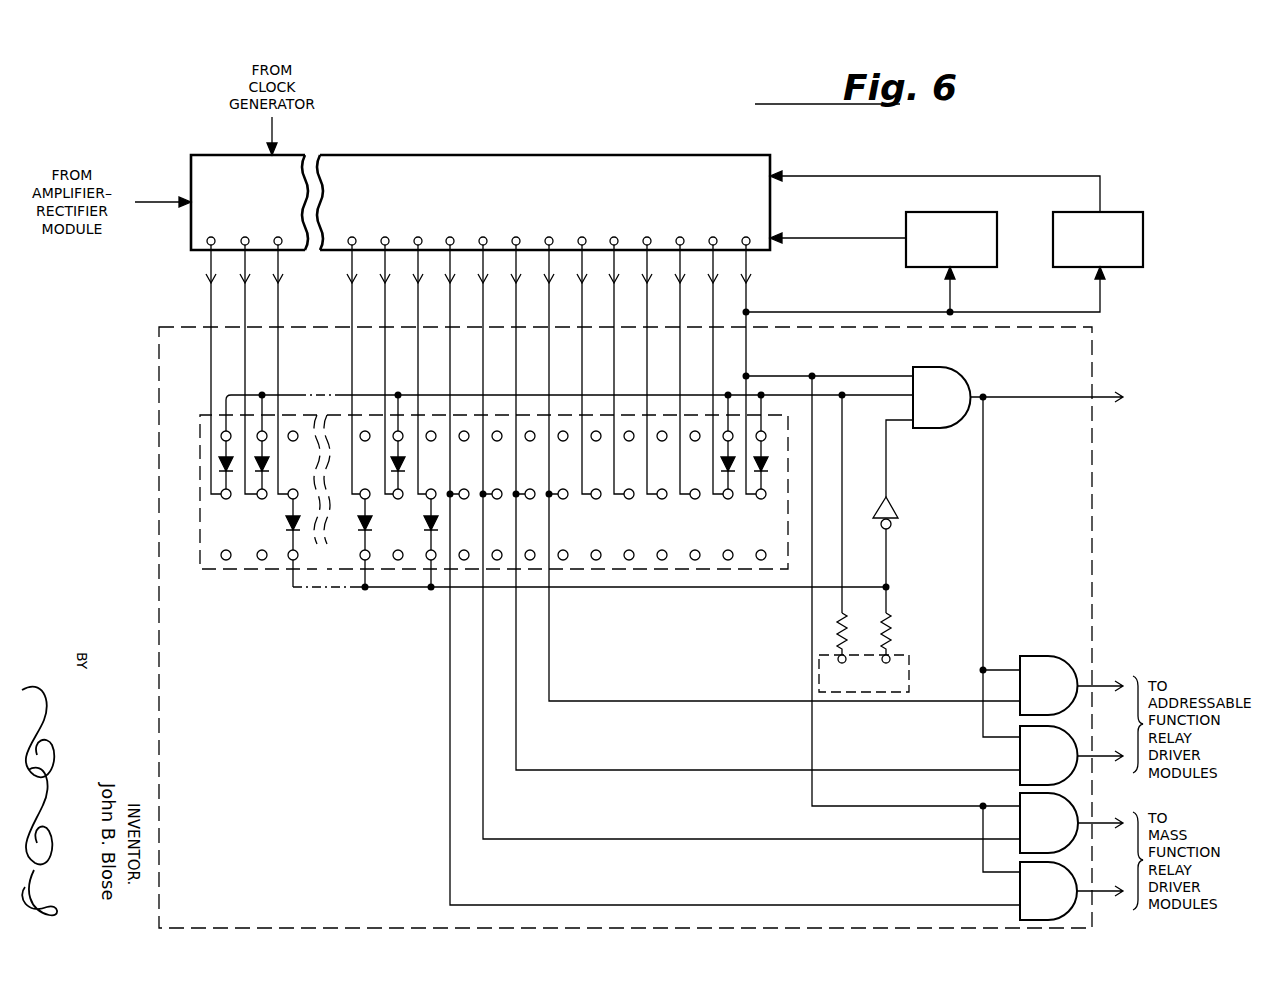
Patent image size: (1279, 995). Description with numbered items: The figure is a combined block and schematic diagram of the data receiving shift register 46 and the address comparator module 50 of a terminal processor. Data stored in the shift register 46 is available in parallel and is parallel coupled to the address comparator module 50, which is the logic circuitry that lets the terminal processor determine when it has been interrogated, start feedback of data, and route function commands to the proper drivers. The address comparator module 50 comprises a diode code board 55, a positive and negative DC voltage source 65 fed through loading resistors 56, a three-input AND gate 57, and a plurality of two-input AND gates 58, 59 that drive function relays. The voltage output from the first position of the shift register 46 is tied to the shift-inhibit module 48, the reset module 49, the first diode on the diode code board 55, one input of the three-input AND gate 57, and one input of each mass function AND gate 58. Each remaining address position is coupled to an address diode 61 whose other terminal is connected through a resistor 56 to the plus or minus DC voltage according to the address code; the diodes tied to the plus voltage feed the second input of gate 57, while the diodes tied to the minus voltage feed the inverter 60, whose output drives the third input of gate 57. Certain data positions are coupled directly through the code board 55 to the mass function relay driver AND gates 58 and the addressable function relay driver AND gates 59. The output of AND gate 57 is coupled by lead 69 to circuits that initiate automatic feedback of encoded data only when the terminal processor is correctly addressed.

The shift register 46 is at (578, 162).
The shift-inhibit module 48 is at (962, 248).
The reset module 49 is at (1108, 250).
The address comparator module 50 is at (158, 358).
The diode code board 55 is at (512, 491).
The loading resistors 56 is at (880, 636).
The three-input AND gate 57 is at (946, 381).
The mass function relay driver AND gates 58 is at (1062, 830).
The addressable function relay driver AND gates 59 is at (1063, 691).
The inverter 60 is at (900, 512).
The address diodes 61 is at (258, 473).
The positive and negative DC voltage source 65 is at (909, 672).
The lead 69 is at (1036, 397).